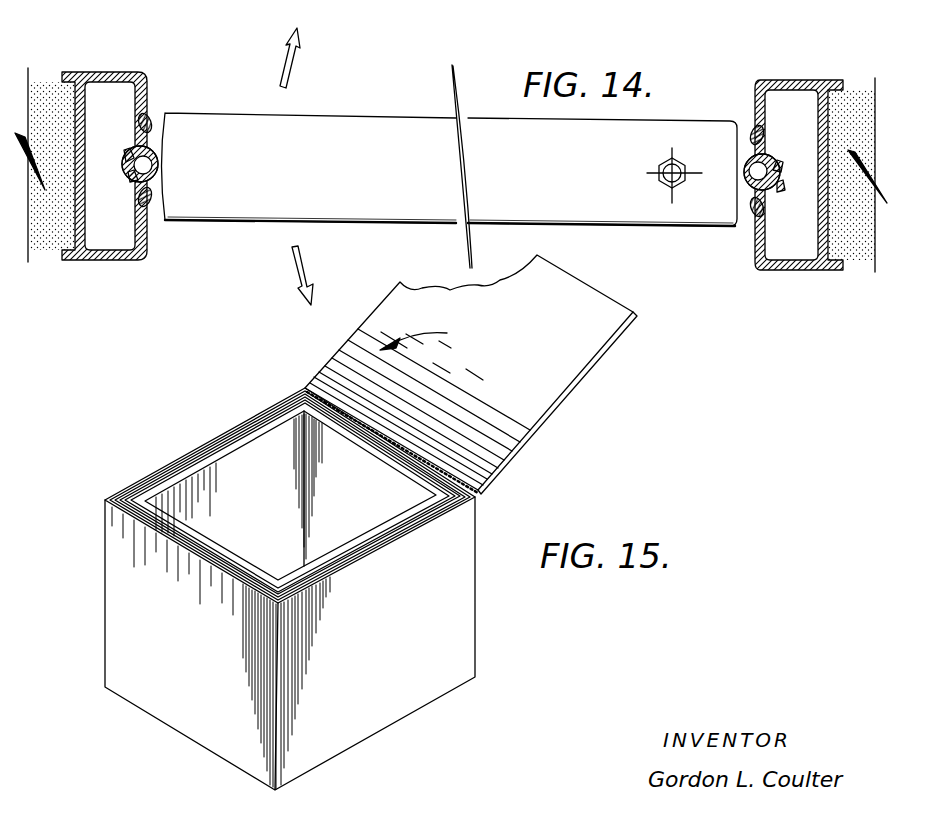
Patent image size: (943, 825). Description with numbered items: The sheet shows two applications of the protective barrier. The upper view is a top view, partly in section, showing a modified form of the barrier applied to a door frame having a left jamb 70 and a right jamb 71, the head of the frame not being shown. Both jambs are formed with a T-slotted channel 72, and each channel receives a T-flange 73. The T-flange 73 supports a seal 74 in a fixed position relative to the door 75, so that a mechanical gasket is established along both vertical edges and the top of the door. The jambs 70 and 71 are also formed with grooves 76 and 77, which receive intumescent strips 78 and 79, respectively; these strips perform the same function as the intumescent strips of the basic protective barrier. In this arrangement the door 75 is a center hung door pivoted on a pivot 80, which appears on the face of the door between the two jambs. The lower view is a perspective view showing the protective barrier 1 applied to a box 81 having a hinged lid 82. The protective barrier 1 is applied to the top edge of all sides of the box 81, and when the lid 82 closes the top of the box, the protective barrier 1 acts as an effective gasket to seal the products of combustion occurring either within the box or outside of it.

In FIG. 15, the protective barrier 1 is at (349, 522).
In FIG. 14, the left jamb 70 is at (120, 48).
In FIG. 14, the right jamb 71 is at (822, 62).
In FIG. 14, the T-slotted channel 72 is at (126, 164).
In FIG. 14, the T-flange 73 is at (128, 170).
In FIG. 14, the seal 74 is at (152, 156).
In FIG. 14, the door 75 is at (420, 88).
In FIG. 14, the groove 76 is at (137, 126).
In FIG. 14, the groove 77 is at (140, 200).
In FIG. 14, the intumescent strip 78 is at (150, 117).
In FIG. 14, the intumescent strip 79 is at (150, 206).
In FIG. 14, the pivot 80 is at (655, 178).
In FIG. 15, the box 81 is at (133, 589).
In FIG. 15, the hinged lid 82 is at (575, 374).